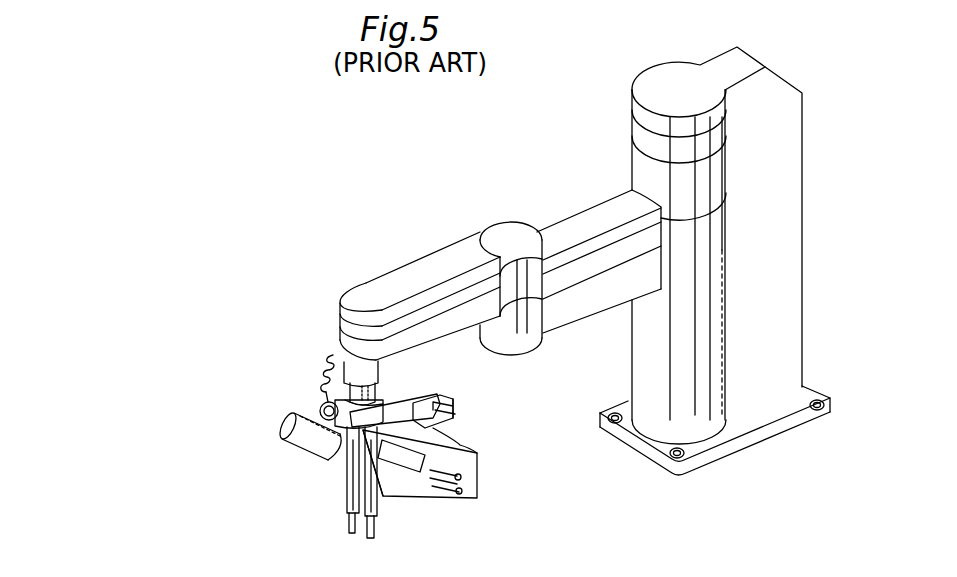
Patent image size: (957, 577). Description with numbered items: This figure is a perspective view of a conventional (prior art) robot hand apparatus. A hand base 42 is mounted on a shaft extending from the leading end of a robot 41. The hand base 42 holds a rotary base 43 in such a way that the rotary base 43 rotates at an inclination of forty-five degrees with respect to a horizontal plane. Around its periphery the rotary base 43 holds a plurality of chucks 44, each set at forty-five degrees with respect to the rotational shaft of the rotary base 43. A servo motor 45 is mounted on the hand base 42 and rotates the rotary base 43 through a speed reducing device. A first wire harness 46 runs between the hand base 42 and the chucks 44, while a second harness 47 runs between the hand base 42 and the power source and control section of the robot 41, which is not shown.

The robot 41 is at (689, 410).
The hand base 42 is at (343, 432).
The rotary base 43 is at (390, 496).
The chucks 44 is at (462, 466).
The servo motor 45 is at (332, 454).
The first wire harness 46 is at (347, 470).
The second harness 47 is at (324, 378).